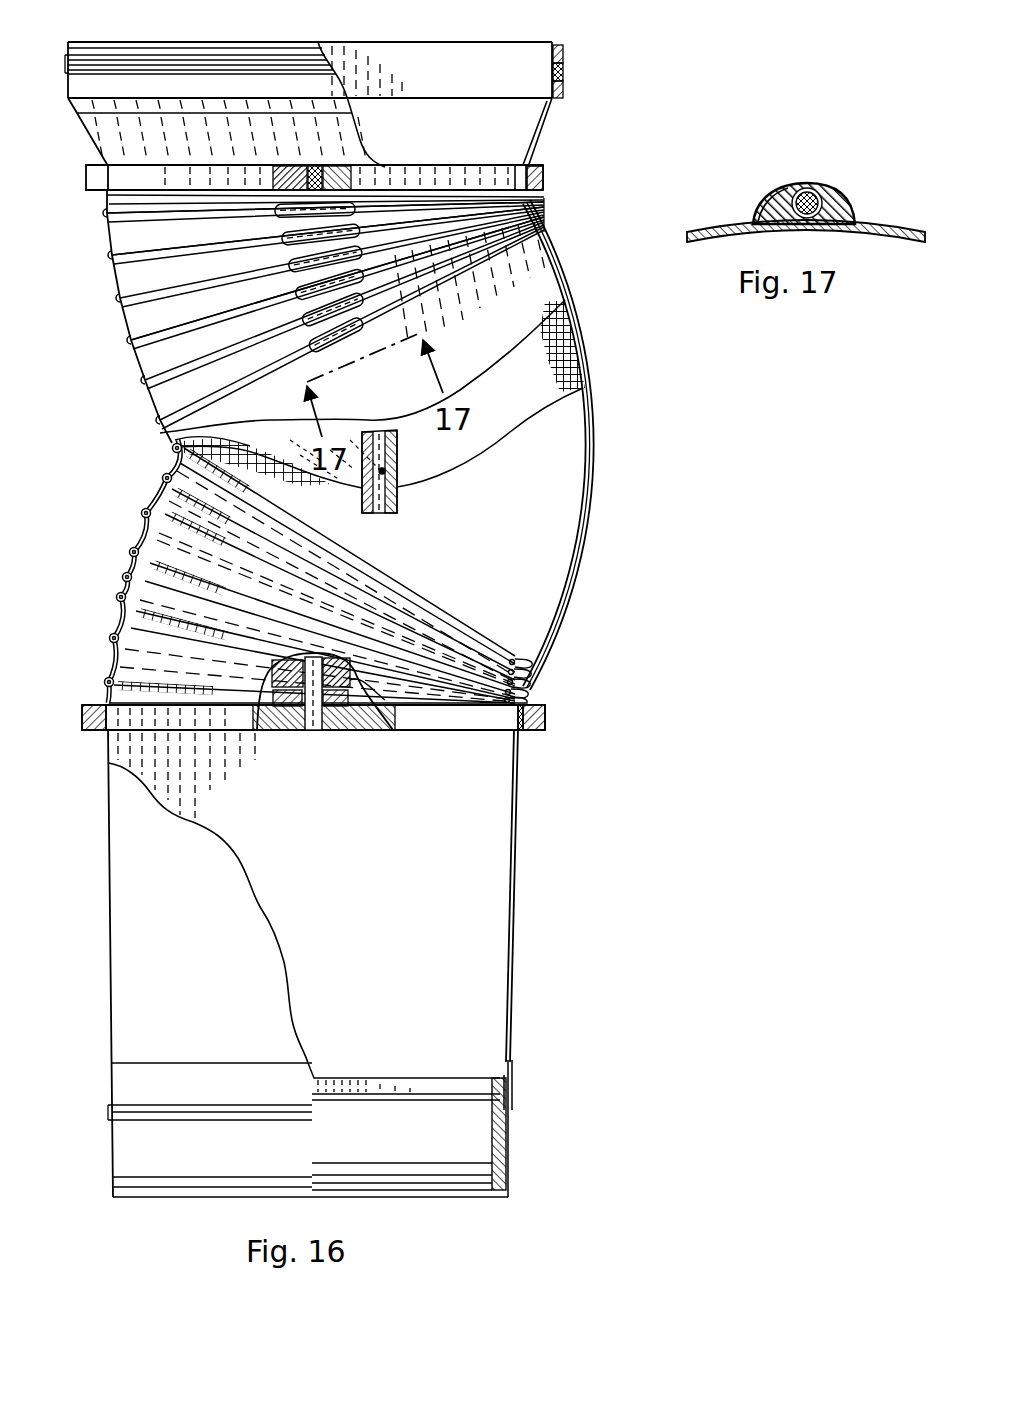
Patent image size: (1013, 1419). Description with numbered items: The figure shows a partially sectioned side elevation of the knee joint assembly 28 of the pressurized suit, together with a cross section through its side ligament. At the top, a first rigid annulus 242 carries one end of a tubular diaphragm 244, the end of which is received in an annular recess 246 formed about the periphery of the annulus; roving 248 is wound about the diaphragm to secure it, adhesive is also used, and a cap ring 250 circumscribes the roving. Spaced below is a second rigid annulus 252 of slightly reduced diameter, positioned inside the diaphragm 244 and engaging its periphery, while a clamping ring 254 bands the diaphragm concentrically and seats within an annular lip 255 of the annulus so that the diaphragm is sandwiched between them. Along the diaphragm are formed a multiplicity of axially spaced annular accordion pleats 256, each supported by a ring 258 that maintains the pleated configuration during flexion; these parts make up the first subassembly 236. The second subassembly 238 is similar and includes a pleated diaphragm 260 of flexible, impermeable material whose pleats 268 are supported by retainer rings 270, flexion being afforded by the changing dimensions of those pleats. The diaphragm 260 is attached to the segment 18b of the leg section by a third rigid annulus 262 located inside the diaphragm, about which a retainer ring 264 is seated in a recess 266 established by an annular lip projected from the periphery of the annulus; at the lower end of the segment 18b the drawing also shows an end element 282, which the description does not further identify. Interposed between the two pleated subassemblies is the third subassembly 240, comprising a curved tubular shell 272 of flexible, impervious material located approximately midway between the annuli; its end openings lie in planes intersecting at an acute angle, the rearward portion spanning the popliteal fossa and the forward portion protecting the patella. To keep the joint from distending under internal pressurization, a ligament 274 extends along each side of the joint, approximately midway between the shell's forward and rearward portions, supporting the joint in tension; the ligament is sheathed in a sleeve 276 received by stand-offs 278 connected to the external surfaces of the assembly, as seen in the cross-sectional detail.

In FIG. 16, the first rigid annulus 242 is at (437, 14).
In FIG. 16, the tubular diaphragm 244 is at (543, 136).
In FIG. 16, the annular recess 246 is at (563, 56).
In FIG. 16, the roving 248 is at (563, 76).
In FIG. 16, the cap ring 250 is at (556, 104).
In FIG. 16, the second rigid annulus 252 is at (522, 168).
In FIG. 16, the clamping ring 254 is at (545, 177).
In FIG. 16, the annular lip 255 is at (530, 200).
In FIG. 16, the annular accordion pleats 256 is at (106, 222).
In FIG. 16, the ring 258 is at (112, 258).
In FIG. 16, the first subassembly 236 is at (100, 326).
In FIG. 16, the retainer rings 270 is at (280, 222).
In FIG. 16, the pleats 268 is at (166, 480).
In FIG. 16, the second subassembly 238 is at (102, 560).
In FIG. 16, the pleated diaphragm 260 is at (104, 664).
In FIG. 16, the curved tubular shell 272 is at (563, 458).
In FIG. 16, the knee joint assembly 28 is at (600, 540).
In FIG. 16, the third subassembly 240 is at (608, 608).
In FIG. 16, the ligament 274 is at (398, 450).
In FIG. 17, the ligament 274 is at (836, 190).
In FIG. 16, the sleeve 276 is at (396, 500).
In FIG. 17, the sleeve 276 is at (810, 190).
In FIG. 16, the stand-offs 278 is at (352, 682).
In FIG. 17, the stand-offs 278 is at (766, 210).
In FIG. 16, the retainer ring 264 is at (546, 718).
In FIG. 16, the recess 266 is at (543, 731).
In FIG. 16, the third rigid annulus 262 is at (455, 712).
In FIG. 16, the segment of the leg section 18b is at (503, 902).
In FIG. 16, the end ring 282 is at (500, 1148).